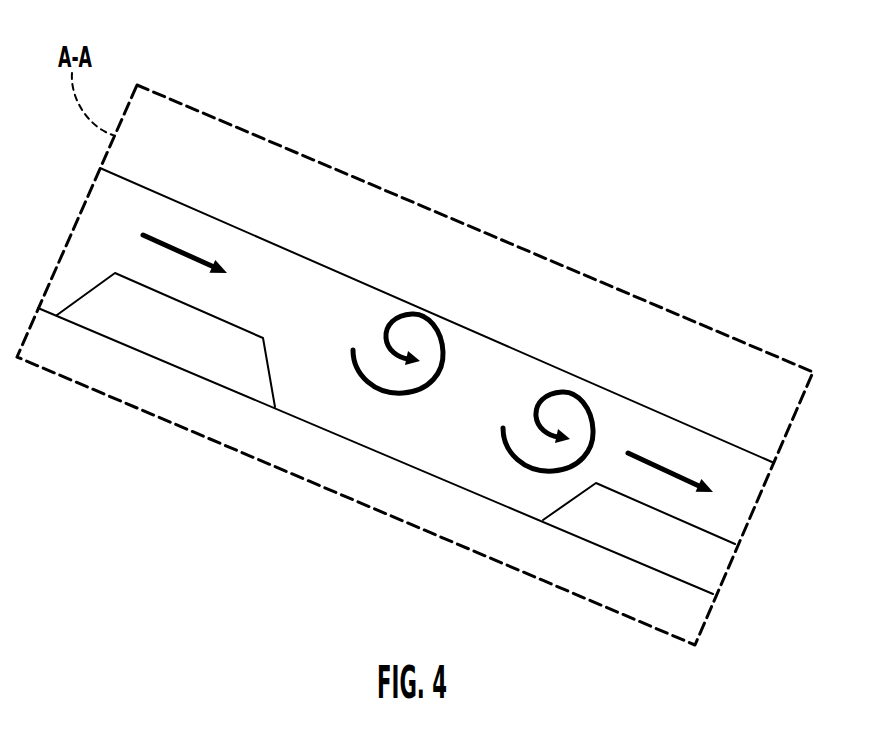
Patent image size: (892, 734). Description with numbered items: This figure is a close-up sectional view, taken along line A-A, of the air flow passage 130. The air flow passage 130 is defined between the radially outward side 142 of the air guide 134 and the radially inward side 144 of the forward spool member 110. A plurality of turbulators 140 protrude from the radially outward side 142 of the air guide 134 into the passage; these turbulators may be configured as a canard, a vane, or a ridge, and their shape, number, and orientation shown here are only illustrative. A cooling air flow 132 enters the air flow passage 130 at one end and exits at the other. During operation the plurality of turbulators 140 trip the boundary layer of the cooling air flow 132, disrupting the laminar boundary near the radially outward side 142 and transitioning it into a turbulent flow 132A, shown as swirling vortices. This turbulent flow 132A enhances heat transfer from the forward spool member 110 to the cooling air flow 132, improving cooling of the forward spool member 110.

The forward spool member 110 is at (506, 280).
The air flow passage 130 is at (738, 478).
The cooling air flow 132 is at (185, 247).
The turbulent flow 132A is at (447, 353).
The air guide 134 is at (353, 475).
The plurality of turbulators 140 is at (275, 370).
The radially outward side 142 is at (315, 425).
The radially inward side 144 is at (320, 260).